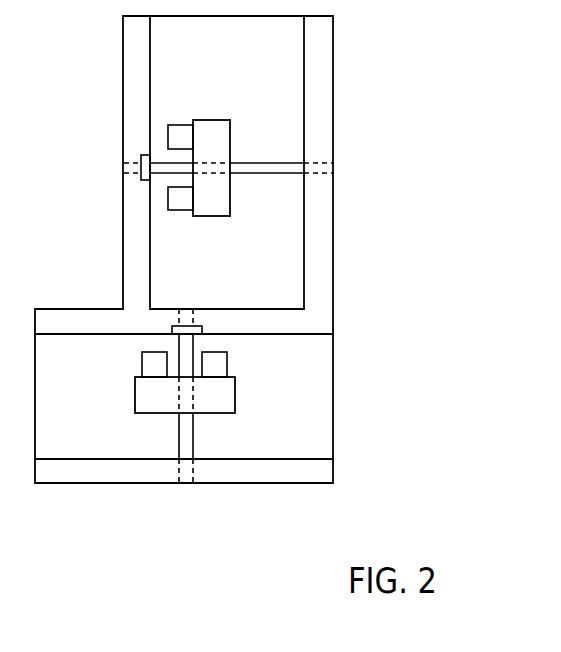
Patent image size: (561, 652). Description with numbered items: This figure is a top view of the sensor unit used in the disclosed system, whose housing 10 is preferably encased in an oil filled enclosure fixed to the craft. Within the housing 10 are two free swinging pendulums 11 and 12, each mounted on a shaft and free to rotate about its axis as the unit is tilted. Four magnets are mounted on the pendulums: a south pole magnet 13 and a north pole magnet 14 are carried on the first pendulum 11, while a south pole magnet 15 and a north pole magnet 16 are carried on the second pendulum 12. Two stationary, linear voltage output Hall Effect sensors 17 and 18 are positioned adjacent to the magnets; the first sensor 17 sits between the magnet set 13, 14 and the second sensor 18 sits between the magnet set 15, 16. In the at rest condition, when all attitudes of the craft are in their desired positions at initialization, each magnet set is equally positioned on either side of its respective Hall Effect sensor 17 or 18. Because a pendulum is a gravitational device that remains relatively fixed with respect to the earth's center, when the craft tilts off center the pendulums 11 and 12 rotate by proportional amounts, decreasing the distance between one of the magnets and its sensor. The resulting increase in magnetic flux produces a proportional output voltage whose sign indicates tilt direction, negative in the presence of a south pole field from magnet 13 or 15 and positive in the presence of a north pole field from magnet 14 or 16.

The housing 10 is at (128, 246).
The pendulum 11 is at (226, 203).
The pendulum 12 is at (236, 404).
The south pole magnet 13 is at (180, 198).
The north pole magnet 14 is at (180, 137).
The south pole magnet 15 is at (154, 364).
The north pole magnet 16 is at (214, 364).
The Hall Effect sensor 17 is at (138, 154).
The Hall Effect sensor 18 is at (202, 325).